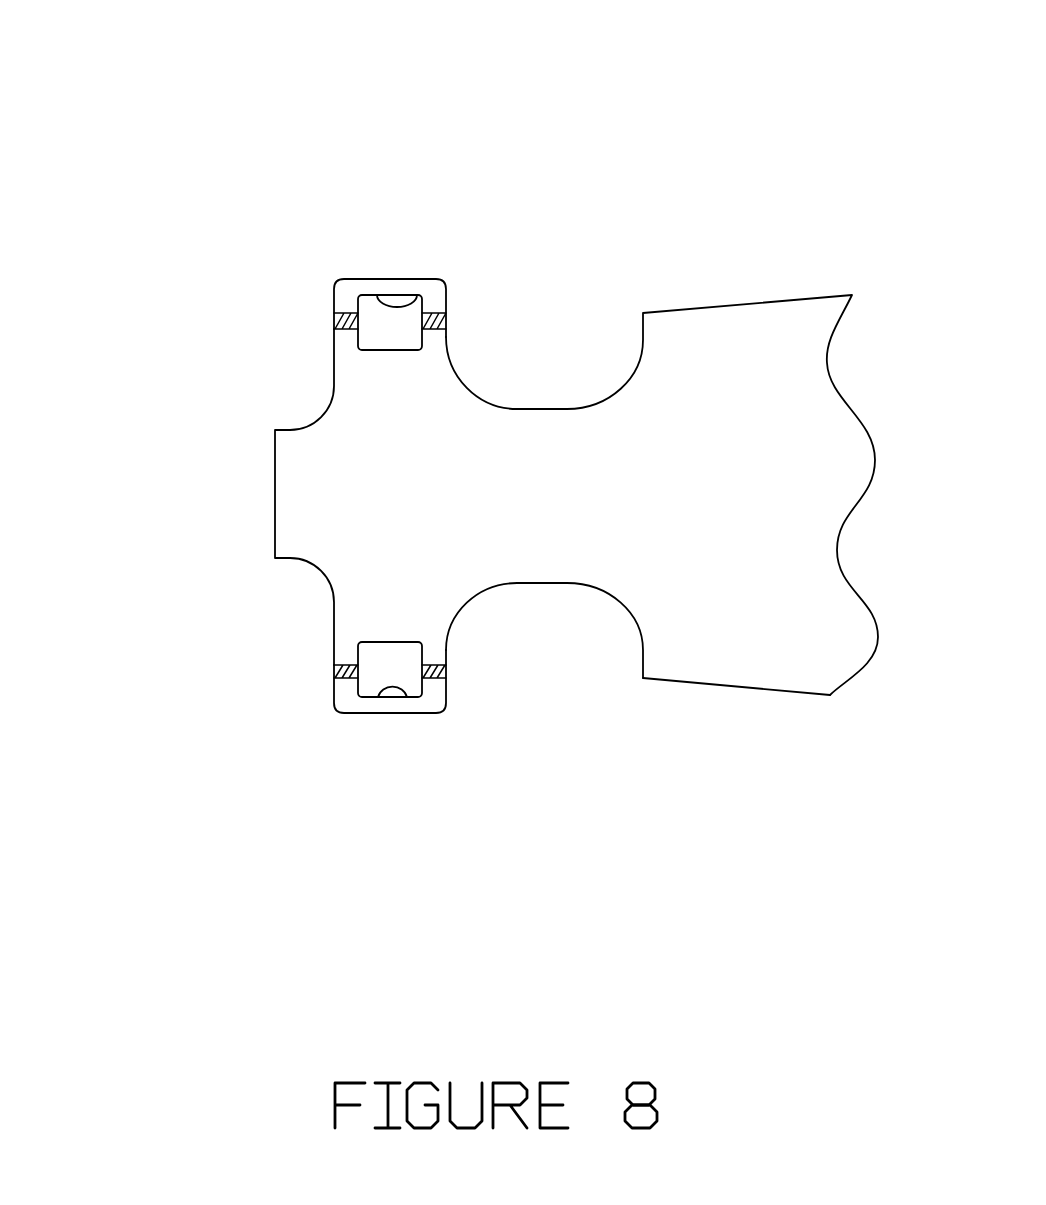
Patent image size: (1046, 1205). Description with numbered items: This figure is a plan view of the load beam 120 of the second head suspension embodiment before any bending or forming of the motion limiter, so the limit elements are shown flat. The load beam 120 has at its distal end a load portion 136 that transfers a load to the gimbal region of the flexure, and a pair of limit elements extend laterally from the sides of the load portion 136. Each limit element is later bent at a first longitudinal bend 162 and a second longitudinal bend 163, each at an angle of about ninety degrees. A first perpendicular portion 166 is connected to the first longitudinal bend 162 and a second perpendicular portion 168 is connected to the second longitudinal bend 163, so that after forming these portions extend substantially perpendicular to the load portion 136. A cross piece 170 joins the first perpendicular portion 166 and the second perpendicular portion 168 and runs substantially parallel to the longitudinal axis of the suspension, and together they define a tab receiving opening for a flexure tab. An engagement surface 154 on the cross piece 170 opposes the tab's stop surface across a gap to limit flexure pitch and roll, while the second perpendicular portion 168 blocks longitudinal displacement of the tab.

The load beam 120 is at (787, 340).
The load portion 136 is at (582, 504).
The engagement surface 154 is at (418, 297).
The first longitudinal bend 162 is at (447, 320).
The second longitudinal bend 163 is at (334, 320).
The first perpendicular portion 166 is at (435, 305).
The second perpendicular portion 168 is at (347, 308).
The cross piece 170 is at (361, 287).